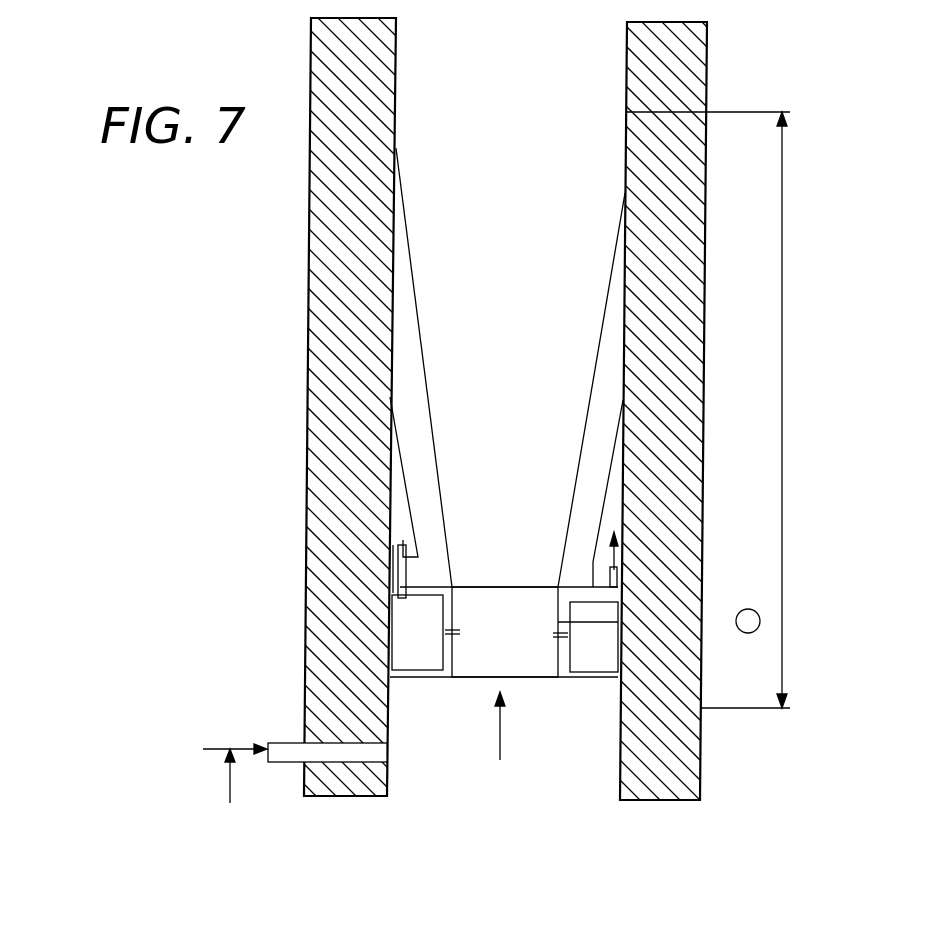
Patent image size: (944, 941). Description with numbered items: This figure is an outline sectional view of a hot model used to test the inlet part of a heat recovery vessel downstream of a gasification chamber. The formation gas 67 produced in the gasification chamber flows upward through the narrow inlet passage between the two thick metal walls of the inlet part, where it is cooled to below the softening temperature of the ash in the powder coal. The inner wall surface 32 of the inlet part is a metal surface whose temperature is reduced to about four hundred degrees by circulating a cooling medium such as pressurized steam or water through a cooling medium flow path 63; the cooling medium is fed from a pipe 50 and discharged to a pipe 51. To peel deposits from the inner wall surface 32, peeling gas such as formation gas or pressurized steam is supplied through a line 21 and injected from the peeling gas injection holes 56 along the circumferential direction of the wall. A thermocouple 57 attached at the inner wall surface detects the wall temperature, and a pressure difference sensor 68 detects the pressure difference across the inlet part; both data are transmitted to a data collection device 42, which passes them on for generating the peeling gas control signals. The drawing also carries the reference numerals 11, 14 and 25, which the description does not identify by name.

The inlet tube 11 is at (213, 748).
The inlet flow arrow 14 is at (228, 790).
The line 21 is at (277, 487).
The pipe 51 is at (235, 530).
The cooling medium flow path 63 is at (430, 671).
The inner wall surface 32 is at (452, 605).
The peeling gas injection holes 56 is at (450, 673).
The formation gas 67 is at (500, 740).
The chamber 25 is at (523, 787).
The thermocouple 57 is at (736, 622).
The data collection device 42 is at (748, 633).
The pipe 50 is at (614, 532).
The pressure difference sensor 68 is at (792, 402).